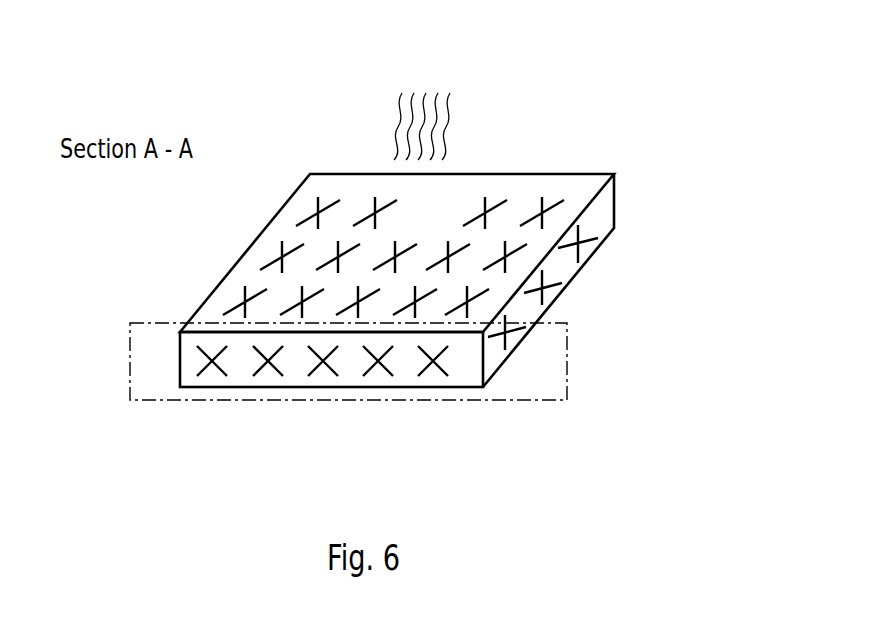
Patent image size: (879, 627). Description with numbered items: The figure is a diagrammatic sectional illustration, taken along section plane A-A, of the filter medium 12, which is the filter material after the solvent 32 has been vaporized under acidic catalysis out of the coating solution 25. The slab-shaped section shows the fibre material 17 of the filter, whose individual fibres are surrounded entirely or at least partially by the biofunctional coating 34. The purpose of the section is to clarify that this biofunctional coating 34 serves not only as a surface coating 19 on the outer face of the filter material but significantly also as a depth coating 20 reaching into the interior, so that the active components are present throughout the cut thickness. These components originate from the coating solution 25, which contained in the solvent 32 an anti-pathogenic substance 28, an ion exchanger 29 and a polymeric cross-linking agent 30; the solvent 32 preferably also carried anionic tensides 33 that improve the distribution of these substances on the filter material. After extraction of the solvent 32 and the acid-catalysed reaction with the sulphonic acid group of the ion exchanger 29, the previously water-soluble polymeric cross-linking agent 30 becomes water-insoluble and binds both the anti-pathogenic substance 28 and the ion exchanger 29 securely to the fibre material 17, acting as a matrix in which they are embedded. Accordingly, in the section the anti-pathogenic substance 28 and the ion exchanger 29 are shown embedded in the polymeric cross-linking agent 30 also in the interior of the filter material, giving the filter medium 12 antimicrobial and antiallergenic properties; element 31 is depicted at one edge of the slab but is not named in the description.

The filter medium 12 is at (565, 126).
The fibre material 17 is at (223, 295).
The surface coating 19 is at (507, 345).
The depth coating 20 is at (214, 366).
The coating solution 25 is at (441, 224).
The anti-pathogenic substance 28 is at (530, 187).
The ion exchanger 29 is at (580, 190).
The polymeric cross-linking agent 30 is at (588, 192).
The edge 31 is at (291, 215).
The solvent 32 is at (448, 123).
The anionic tensides 33 is at (568, 213).
The biofunctional coating 34 is at (263, 250).